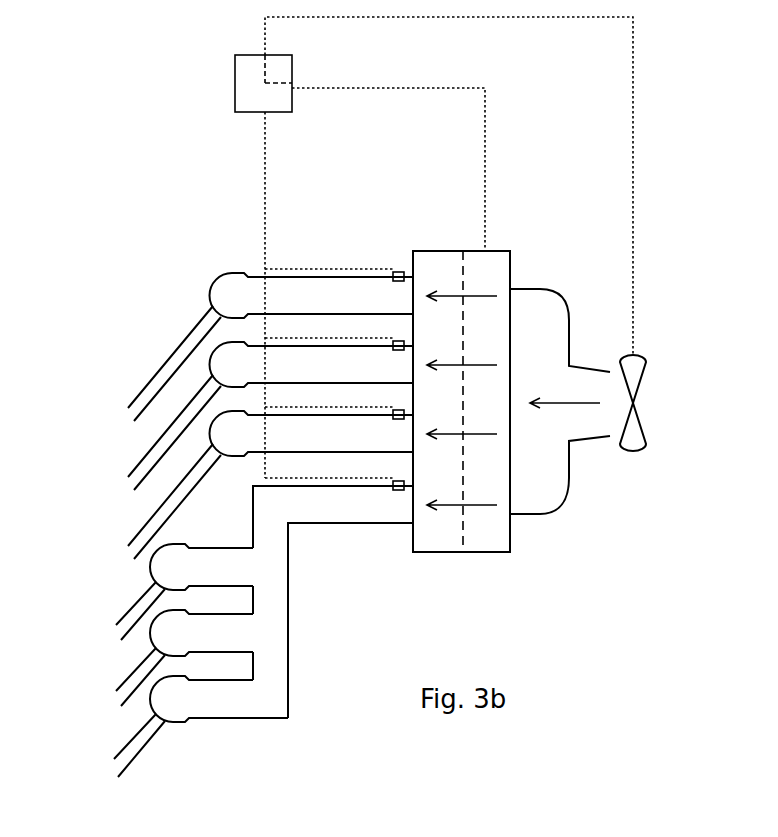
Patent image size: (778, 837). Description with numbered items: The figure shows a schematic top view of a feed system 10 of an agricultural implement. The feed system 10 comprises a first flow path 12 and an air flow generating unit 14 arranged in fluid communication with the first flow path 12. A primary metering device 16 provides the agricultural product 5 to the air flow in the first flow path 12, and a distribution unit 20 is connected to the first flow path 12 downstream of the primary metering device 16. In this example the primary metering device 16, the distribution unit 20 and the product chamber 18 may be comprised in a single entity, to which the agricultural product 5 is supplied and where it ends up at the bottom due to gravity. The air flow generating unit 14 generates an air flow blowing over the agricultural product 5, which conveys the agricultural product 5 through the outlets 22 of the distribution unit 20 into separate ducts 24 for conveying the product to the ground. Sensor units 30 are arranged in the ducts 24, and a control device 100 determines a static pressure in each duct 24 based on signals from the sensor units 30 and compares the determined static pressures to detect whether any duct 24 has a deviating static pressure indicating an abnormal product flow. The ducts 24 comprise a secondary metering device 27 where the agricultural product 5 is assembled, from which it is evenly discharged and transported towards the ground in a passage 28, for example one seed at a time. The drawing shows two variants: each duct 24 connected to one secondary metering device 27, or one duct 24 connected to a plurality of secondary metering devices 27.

The control device 100 is at (434, 247).
The product chamber 18 is at (500, 268).
The primary metering device 16 is at (485, 553).
The distribution unit 20 is at (438, 553).
The agricultural product 5 is at (491, 403).
The first flow path 12 is at (570, 478).
The air flow generating unit 14 is at (645, 362).
The feed system 10 is at (580, 580).
The duct 24 is at (316, 314).
The secondary metering device 27 is at (209, 294).
The passage 28 is at (136, 398).
The sensor unit 30 is at (393, 272).
The outlet 22 is at (393, 566).